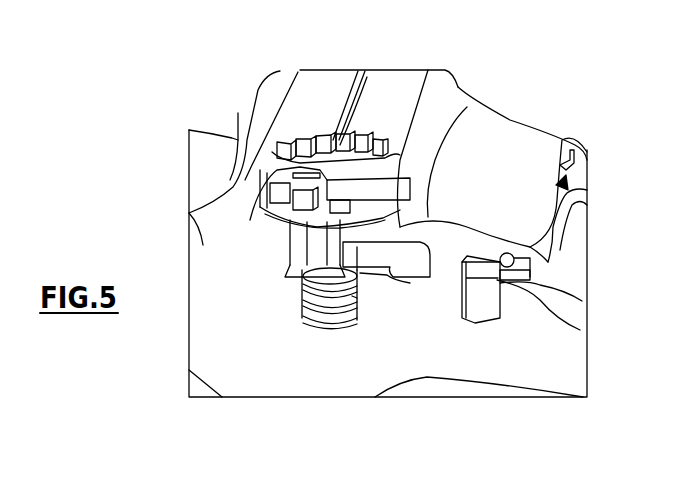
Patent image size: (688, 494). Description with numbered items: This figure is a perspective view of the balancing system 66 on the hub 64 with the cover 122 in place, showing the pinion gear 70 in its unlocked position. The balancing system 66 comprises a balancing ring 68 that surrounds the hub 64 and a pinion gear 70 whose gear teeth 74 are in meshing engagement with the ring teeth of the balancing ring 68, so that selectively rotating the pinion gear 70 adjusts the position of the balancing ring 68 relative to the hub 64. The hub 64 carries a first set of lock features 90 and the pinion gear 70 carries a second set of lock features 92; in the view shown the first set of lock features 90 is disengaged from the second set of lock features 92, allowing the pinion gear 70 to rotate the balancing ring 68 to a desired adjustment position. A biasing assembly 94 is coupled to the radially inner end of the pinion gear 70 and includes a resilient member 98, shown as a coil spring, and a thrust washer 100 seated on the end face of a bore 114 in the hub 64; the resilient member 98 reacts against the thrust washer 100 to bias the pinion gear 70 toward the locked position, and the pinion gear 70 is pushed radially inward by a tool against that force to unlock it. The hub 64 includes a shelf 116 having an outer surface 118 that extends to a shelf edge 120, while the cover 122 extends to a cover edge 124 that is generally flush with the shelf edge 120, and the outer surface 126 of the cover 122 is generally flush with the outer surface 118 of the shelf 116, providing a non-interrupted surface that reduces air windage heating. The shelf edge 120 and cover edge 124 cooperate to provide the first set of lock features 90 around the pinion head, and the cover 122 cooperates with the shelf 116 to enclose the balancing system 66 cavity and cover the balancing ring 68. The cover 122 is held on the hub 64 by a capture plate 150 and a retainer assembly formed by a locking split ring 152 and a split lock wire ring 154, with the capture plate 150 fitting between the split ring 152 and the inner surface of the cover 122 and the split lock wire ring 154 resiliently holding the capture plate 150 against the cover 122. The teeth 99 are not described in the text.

The hub 64 is at (203, 245).
The balancing system 66 is at (225, 175).
The balancing ring 68 is at (418, 273).
The pinion gear 70 is at (420, 220).
The gear teeth 74 is at (297, 260).
The first set of lock features 90 is at (347, 120).
The second set of lock features 92 is at (260, 200).
The biasing assembly 94 is at (299, 330).
The resilient member 98 is at (332, 313).
The teeth 99 is at (318, 135).
The thrust washer 100 is at (352, 317).
The bore 114 is at (355, 297).
The shelf 116 is at (238, 113).
The outer surface 118 is at (292, 69).
The shelf edge 120 is at (343, 90).
The cover 122 is at (457, 97).
The cover edge 124 is at (367, 77).
The outer surface 126 is at (420, 80).
The capture plate 150 is at (582, 300).
The locking split ring 152 is at (483, 305).
The split lock wire ring 154 is at (587, 267).